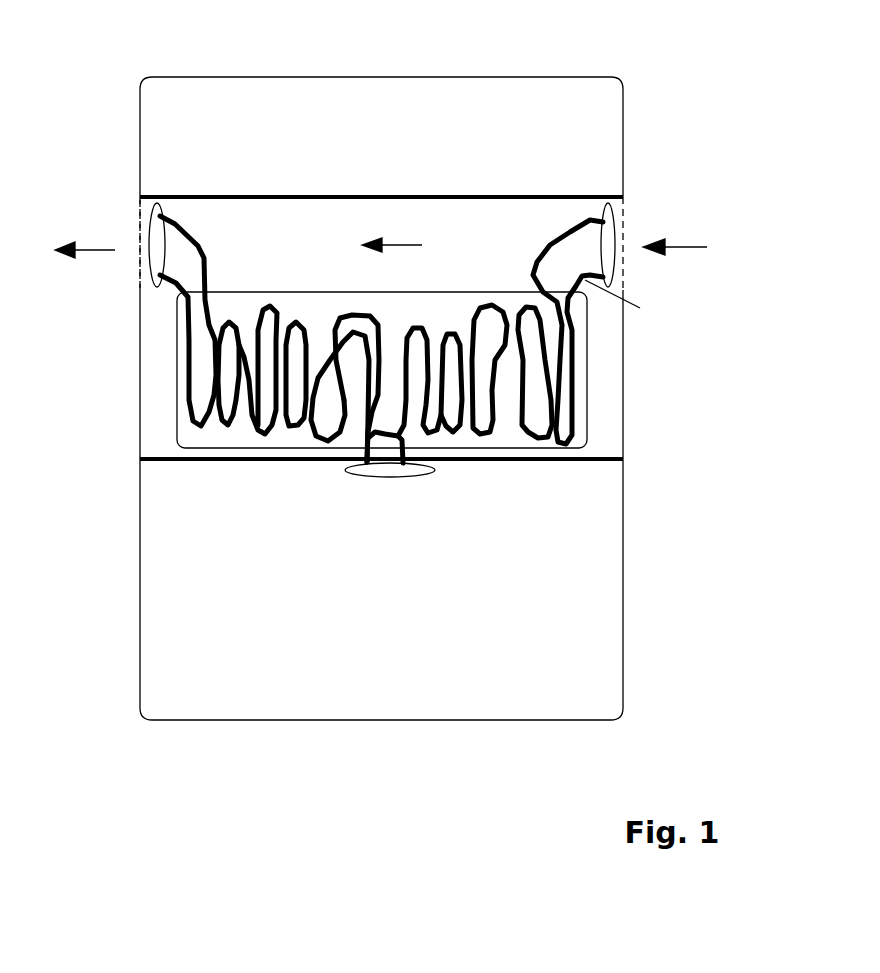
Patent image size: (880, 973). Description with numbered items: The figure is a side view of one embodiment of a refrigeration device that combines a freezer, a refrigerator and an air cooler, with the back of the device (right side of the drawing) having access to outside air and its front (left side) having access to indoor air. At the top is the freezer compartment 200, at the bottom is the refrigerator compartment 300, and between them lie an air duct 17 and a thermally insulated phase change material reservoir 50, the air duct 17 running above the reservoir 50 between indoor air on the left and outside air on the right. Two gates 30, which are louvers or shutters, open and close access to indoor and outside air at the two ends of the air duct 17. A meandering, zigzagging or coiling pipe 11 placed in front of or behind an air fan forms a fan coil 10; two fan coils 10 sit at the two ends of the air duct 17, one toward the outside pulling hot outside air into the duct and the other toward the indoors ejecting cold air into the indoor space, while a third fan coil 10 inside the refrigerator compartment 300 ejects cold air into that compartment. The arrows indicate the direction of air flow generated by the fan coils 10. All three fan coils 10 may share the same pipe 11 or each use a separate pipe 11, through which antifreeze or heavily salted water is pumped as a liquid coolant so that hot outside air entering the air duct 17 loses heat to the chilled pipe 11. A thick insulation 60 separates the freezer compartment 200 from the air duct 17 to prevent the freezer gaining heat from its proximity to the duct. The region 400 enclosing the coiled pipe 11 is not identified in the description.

The fan coil 10 is at (158, 230).
The pipe 11 is at (205, 407).
The air duct 17 is at (300, 230).
The gate 30 is at (140, 273).
The phase change material reservoir 50 is at (513, 375).
The insulation 60 is at (563, 195).
The freezer compartment 200 is at (557, 100).
The refrigerator compartment 300 is at (585, 665).
The compartment 400 is at (597, 382).